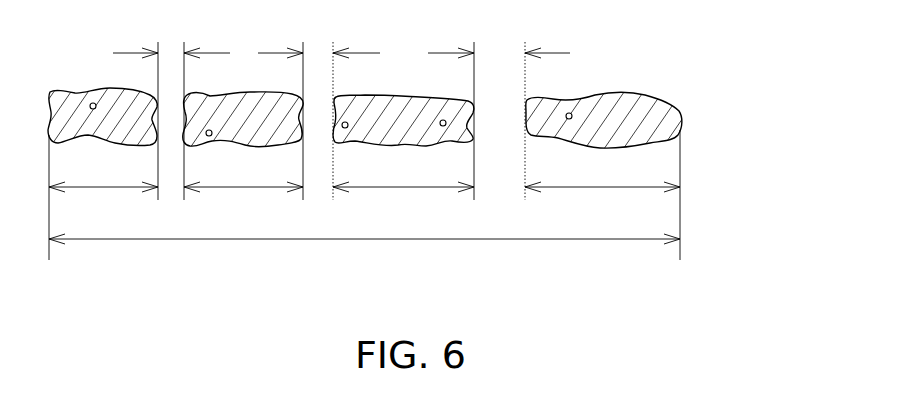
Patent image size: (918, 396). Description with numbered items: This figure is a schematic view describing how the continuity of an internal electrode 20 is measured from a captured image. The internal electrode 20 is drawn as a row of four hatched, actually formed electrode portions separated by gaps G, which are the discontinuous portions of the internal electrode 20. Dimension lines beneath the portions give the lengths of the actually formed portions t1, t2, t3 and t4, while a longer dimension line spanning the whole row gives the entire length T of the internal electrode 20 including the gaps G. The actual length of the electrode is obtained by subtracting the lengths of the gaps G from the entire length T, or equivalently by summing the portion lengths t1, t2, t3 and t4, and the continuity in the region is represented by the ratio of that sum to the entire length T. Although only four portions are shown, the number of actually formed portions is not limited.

The internal electrode 20 is at (682, 121).
The gap G is at (341, 37).
The length of first actually formed internal electrode portion t1 is at (103, 201).
The length of second actually formed internal electrode portion t2 is at (243, 201).
The length of third actually formed internal electrode portion t3 is at (403, 201).
The length of fourth actually formed internal electrode portion t4 is at (602, 201).
The entire length of internal electrode T is at (364, 255).